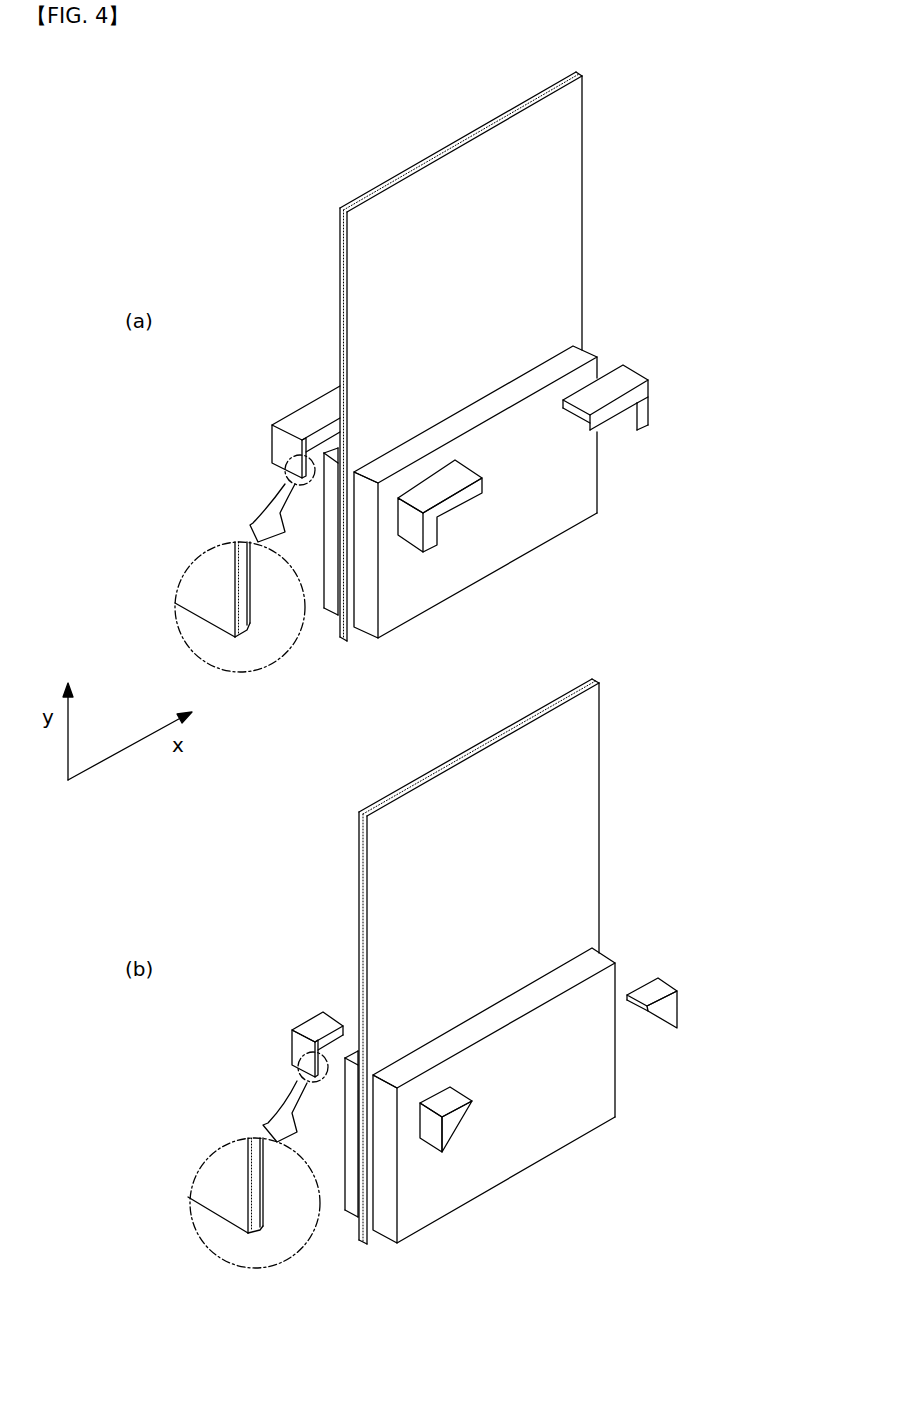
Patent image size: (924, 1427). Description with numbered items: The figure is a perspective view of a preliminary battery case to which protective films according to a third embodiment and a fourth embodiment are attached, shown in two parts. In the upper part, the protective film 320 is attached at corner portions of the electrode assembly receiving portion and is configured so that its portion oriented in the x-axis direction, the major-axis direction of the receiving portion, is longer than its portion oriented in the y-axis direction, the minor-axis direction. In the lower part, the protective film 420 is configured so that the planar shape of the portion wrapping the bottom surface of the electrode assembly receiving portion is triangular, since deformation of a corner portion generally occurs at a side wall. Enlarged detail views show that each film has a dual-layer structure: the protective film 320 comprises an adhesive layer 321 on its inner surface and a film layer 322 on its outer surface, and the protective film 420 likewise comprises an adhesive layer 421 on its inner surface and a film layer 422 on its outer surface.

The protective film 320 is at (432, 528).
The adhesive layer 321 is at (249, 626).
The film layer 322 is at (238, 637).
The protective film 420 is at (450, 1128).
The adhesive layer 421 is at (262, 1228).
The film layer 422 is at (251, 1233).